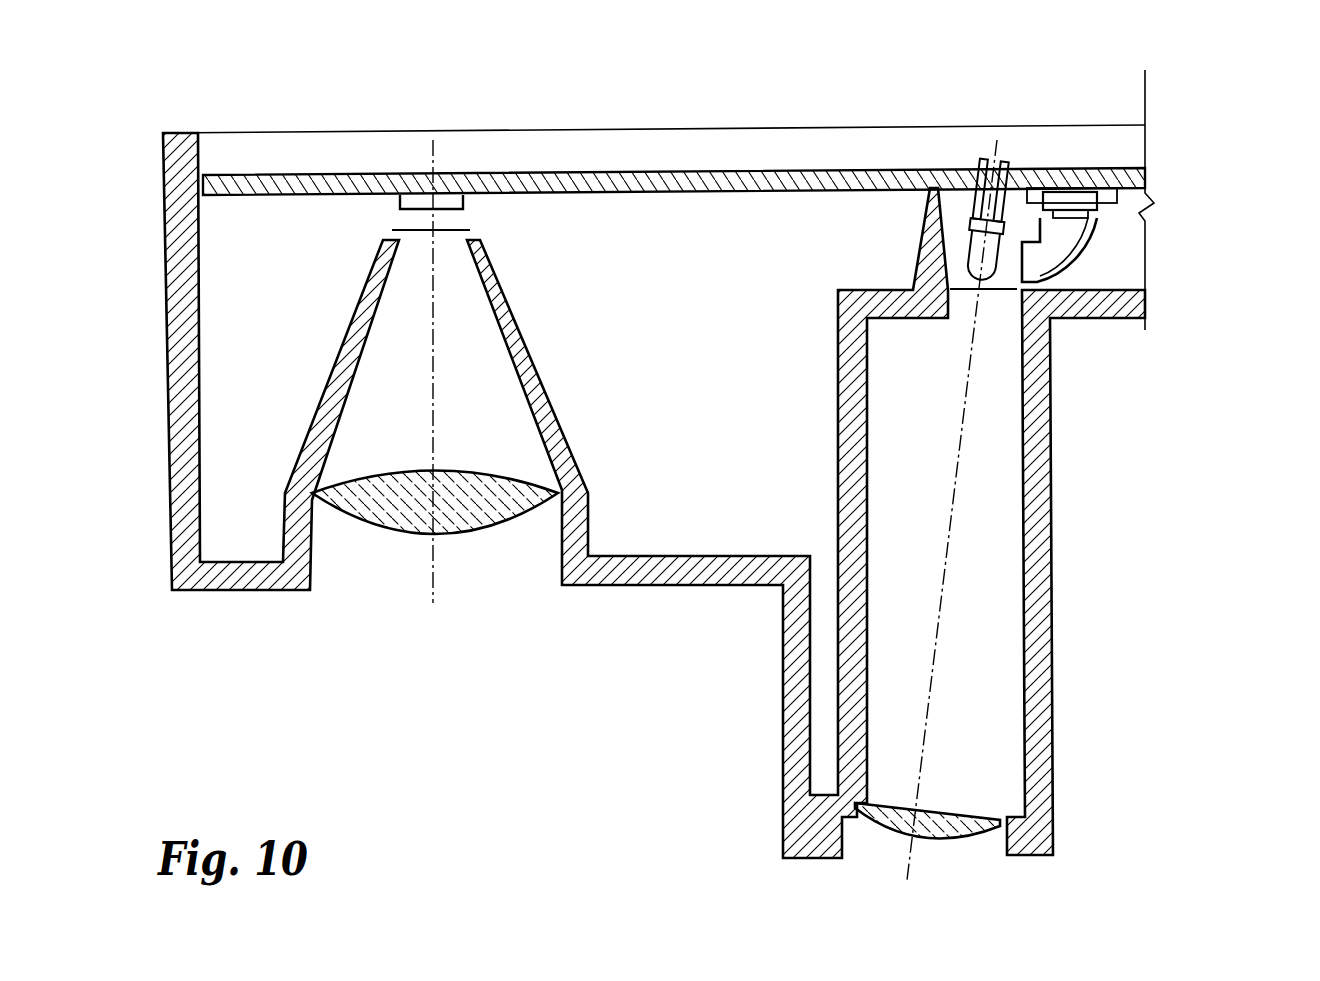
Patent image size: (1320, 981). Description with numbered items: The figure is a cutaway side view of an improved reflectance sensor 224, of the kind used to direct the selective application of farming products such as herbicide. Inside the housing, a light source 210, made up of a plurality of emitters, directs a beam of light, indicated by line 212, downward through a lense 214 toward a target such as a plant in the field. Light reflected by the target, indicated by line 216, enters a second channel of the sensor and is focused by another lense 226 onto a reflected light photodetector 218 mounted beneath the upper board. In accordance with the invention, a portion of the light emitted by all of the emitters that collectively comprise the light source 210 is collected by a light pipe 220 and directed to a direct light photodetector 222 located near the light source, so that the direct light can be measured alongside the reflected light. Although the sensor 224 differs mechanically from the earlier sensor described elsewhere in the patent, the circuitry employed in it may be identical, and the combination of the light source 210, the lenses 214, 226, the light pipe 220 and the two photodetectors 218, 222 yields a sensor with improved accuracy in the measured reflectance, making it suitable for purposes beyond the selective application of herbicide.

The light source 210 is at (1027, 290).
The line indicating beam of light 212 is at (945, 578).
The lense 214 is at (937, 837).
The line indicating reflected light 216 is at (435, 397).
The reflected light photodetector 218 is at (407, 185).
The light pipe 220 is at (1097, 221).
The direct light photodetector 222 is at (1067, 188).
The sensor 224 is at (168, 314).
The lense 226 is at (403, 533).